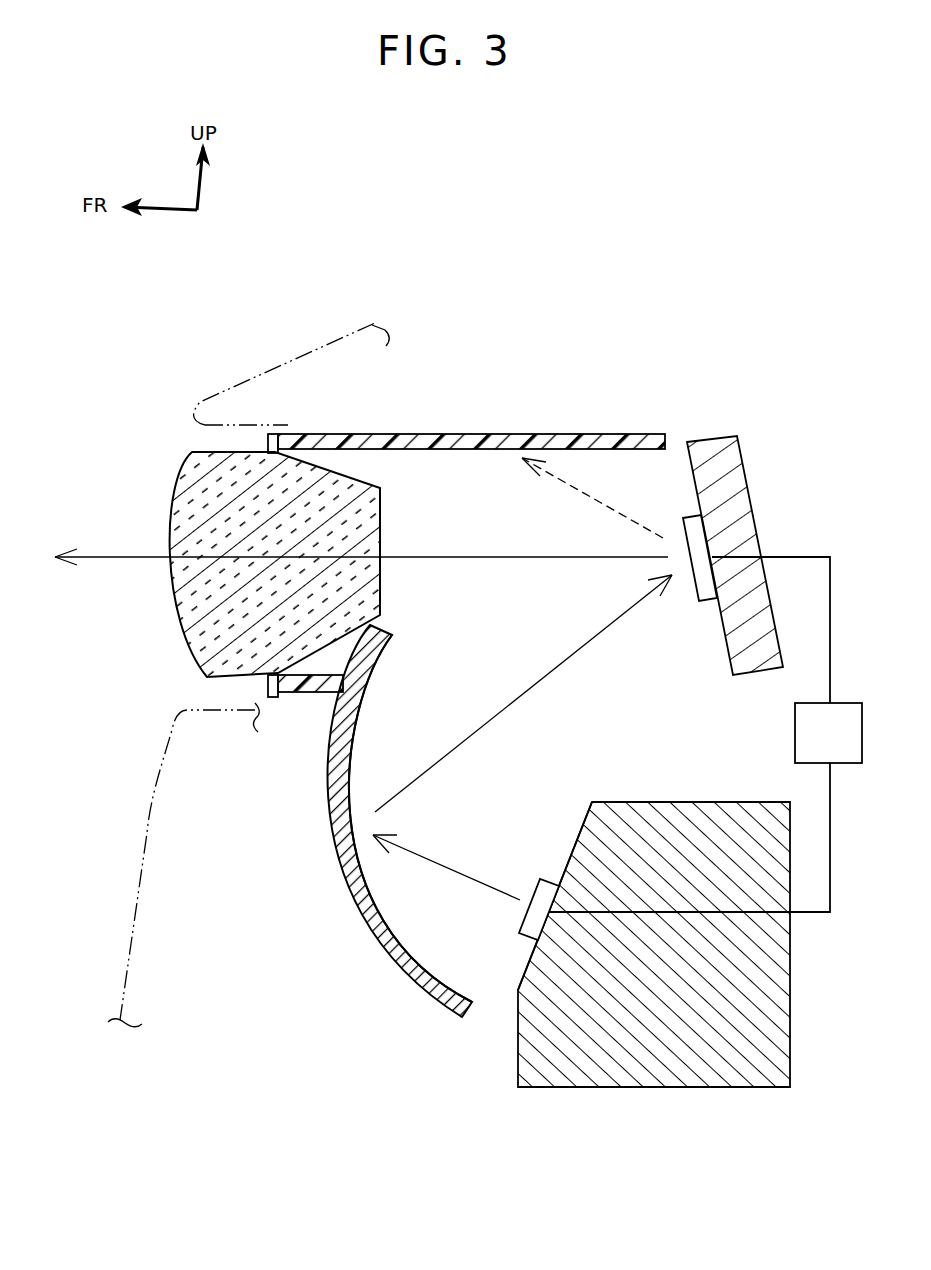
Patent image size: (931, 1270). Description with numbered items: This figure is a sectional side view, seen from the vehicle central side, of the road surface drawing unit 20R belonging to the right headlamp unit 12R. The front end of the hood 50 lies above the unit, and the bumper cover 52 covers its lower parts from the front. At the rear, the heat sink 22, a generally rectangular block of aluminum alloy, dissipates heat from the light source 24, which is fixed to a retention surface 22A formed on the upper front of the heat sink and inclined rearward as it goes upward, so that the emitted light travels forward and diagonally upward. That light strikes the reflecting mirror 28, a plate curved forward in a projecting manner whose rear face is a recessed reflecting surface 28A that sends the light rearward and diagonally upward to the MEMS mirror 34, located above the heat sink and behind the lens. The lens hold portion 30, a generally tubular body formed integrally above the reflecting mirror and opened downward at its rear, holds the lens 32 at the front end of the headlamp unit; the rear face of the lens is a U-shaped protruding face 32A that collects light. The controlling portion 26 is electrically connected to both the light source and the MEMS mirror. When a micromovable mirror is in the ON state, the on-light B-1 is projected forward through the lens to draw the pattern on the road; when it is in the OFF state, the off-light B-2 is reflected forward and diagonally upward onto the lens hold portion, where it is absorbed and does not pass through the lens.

The right headlamp unit 12R is at (148, 398).
The road surface drawing unit 20R is at (140, 447).
The hood 50 is at (325, 342).
The bumper cover 52 is at (143, 835).
The lens 32 is at (172, 530).
The protruding face 32A is at (383, 518).
The lens hold portion 30 is at (478, 434).
The MEMS mirror 34 is at (683, 527).
The controlling portion 26 is at (793, 733).
The heat sink 22 is at (683, 802).
The retention surface 22A is at (580, 830).
The light source 24 is at (520, 938).
The reflecting mirror 28 is at (343, 880).
The reflecting surface 28A is at (355, 735).
The on-light B-1 is at (503, 557).
The off-light B-2 is at (570, 485).